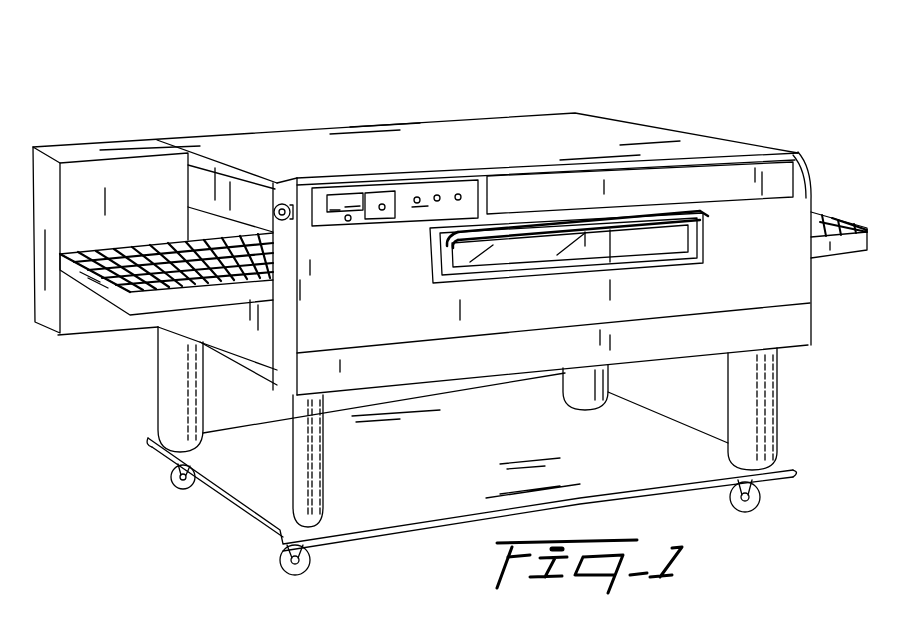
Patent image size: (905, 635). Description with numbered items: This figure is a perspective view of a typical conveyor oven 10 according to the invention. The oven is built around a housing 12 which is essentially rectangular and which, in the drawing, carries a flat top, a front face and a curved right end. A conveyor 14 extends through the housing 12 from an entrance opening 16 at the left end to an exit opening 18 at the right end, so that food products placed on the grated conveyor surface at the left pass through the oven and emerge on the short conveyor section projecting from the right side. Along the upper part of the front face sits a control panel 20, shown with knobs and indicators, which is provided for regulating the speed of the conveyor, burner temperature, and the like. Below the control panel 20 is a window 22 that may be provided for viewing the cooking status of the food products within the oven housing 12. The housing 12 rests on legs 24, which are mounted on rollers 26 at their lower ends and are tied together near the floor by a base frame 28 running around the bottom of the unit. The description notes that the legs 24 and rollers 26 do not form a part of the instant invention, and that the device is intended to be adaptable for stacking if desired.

The conveyor oven 10 is at (473, 100).
The housing 12 is at (718, 145).
The conveyor 14 is at (101, 290).
The entrance opening 16 is at (270, 335).
The exit opening 18 is at (811, 278).
The control panel 20 is at (452, 188).
The window 22 is at (675, 242).
The legs 24 is at (750, 397).
The rollers 26 is at (760, 498).
The base frame 28 is at (471, 462).